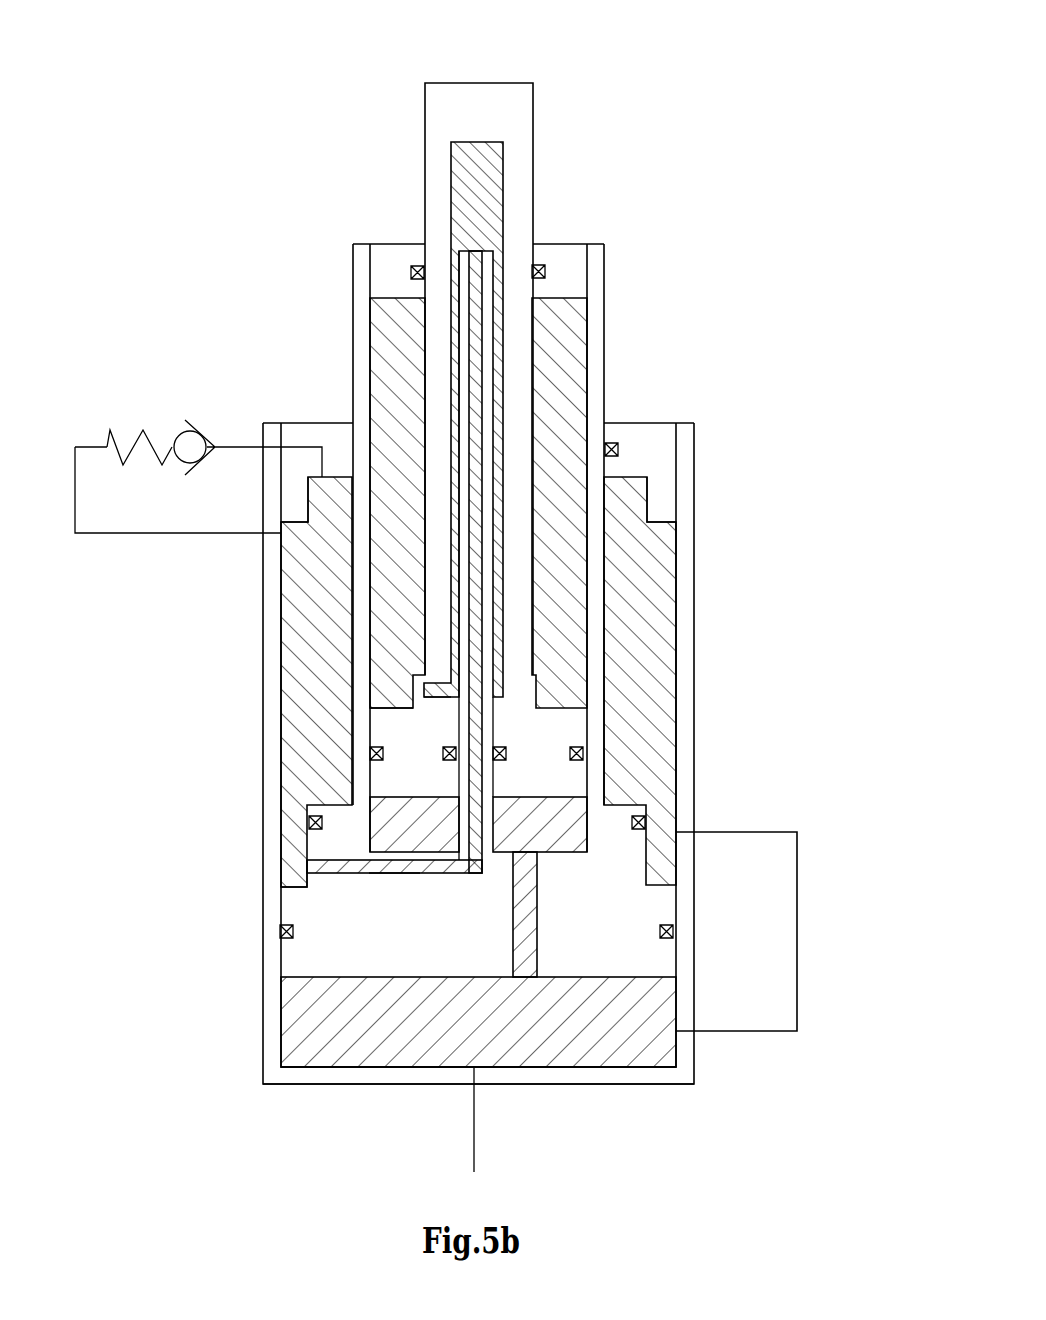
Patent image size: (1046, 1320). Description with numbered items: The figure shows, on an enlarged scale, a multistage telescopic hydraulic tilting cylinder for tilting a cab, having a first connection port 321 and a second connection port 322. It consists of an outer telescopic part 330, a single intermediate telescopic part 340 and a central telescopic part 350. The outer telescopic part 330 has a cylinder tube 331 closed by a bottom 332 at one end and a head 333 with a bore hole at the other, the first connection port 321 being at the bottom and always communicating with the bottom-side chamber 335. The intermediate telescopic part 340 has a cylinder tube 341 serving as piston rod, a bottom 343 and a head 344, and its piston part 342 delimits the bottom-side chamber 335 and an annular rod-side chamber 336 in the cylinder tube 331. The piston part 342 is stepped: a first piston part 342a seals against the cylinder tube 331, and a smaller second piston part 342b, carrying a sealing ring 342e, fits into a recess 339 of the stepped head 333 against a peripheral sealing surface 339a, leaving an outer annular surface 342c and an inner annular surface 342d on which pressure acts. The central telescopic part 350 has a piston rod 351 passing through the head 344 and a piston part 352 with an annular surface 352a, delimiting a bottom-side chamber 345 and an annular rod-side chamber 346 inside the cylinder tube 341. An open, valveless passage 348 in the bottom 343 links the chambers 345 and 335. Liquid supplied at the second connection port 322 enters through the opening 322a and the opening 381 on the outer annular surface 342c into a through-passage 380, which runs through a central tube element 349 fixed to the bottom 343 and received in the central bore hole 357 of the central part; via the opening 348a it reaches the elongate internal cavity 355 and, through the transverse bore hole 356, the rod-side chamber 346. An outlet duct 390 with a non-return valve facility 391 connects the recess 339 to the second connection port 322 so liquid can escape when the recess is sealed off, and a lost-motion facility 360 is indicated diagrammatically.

The first connection port 321 is at (473, 1084).
The second connection port 322 is at (215, 532).
The opening 322a is at (278, 537).
The outer telescopic part 330 is at (703, 628).
The cylinder tube 331 is at (680, 675).
The bottom 332 is at (502, 1072).
The head 333 is at (627, 433).
The bottom-side chamber 335 is at (578, 1053).
The annular rod-side chamber 336 is at (637, 565).
The recess 339 is at (625, 500).
The peripheral sealing surface 339a is at (647, 507).
The intermediate telescopic part 340 is at (615, 258).
The cylinder tube 341 is at (593, 325).
The piston part 342 is at (320, 938).
The first piston part 342a is at (307, 912).
The second piston part 342b is at (328, 850).
The outer annular surface 342c is at (300, 887).
The inner annular surface 342d is at (327, 800).
The sealing ring 342e is at (640, 822).
The bottom 343 is at (412, 1013).
The head 344 is at (393, 260).
The bottom-side chamber 345 is at (532, 813).
The annular rod-side chamber 346 is at (377, 322).
The open passage 348 is at (527, 960).
The opening 348a is at (477, 253).
The tube element 349 is at (463, 388).
The central telescopic part 350 is at (548, 105).
The piston rod 351 is at (517, 144).
The piston part 352 is at (385, 725).
The annular surface 352a is at (393, 703).
The internal cavity 355 is at (460, 165).
The transverse bore hole 356 is at (423, 690).
The central bore hole 357 is at (493, 723).
The lost-motion facility 360 is at (728, 1032).
The through-passage 380 is at (393, 870).
The opening 381 is at (302, 868).
The outlet duct 390 is at (235, 440).
The non-return valve facility 391 is at (144, 430).